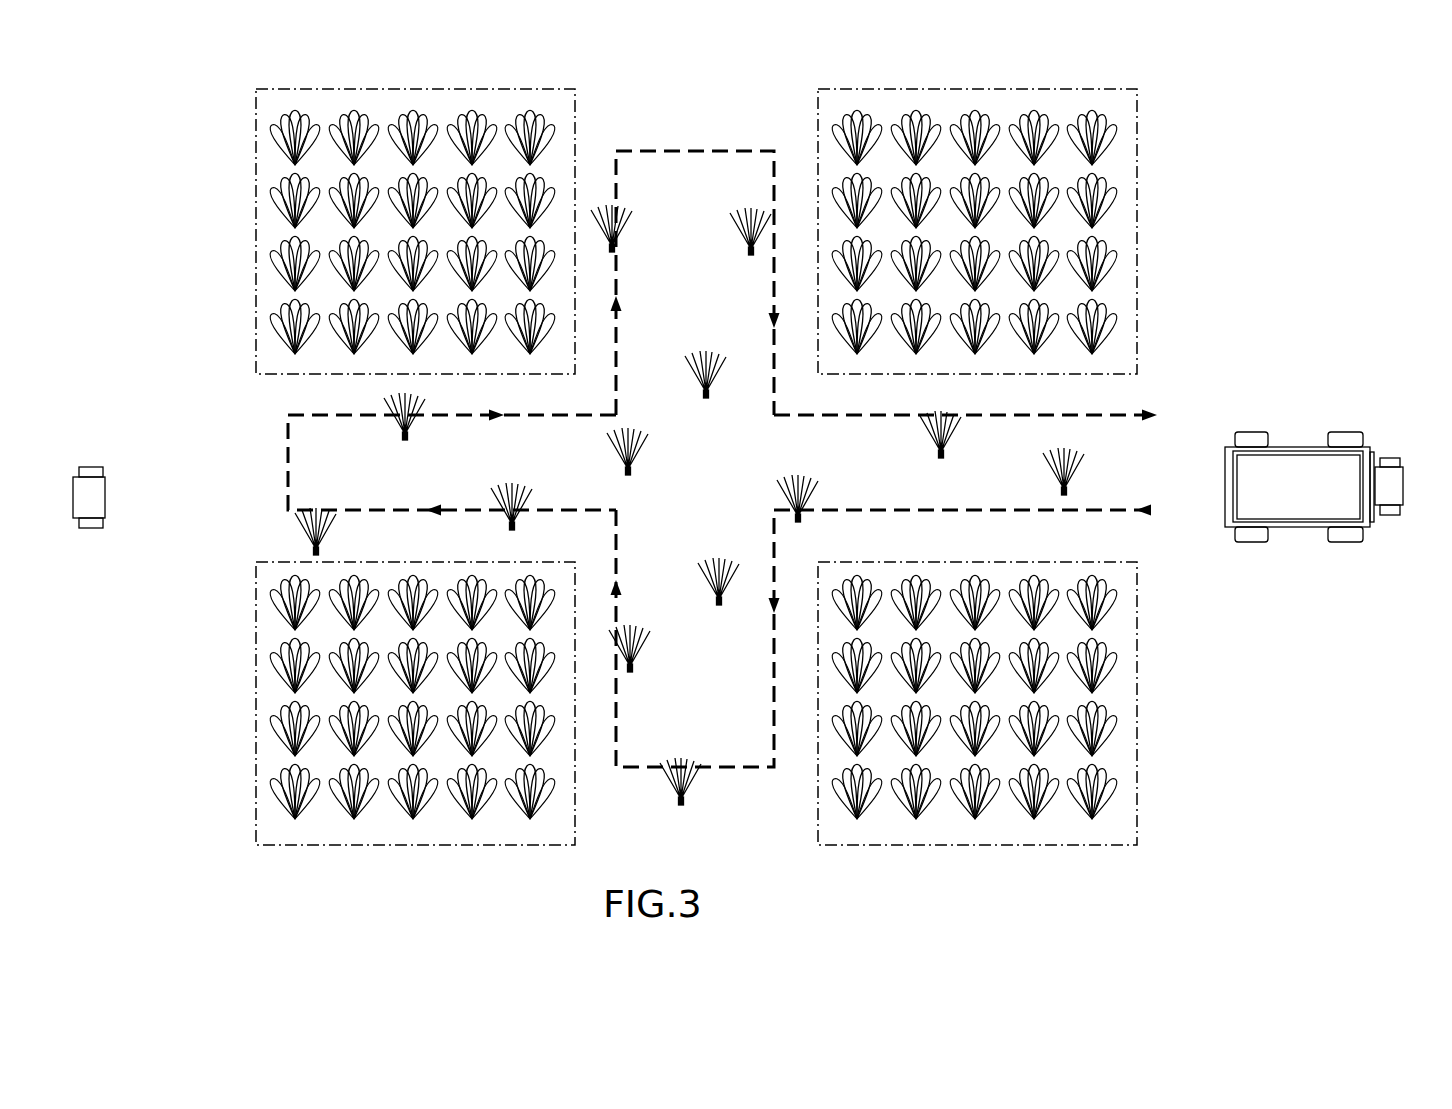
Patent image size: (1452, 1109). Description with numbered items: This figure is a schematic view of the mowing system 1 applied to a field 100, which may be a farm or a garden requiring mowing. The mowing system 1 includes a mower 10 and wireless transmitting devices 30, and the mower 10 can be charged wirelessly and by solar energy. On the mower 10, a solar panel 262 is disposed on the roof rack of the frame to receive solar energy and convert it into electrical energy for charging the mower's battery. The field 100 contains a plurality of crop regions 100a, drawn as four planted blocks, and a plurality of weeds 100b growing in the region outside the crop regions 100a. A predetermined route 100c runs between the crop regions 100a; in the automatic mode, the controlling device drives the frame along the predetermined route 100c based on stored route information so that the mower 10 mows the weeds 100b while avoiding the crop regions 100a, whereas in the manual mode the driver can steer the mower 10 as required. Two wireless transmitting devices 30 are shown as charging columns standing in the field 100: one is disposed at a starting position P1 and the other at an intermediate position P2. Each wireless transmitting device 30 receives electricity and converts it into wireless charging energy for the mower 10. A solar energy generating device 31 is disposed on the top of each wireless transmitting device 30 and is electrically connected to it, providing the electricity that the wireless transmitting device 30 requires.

The mowing system 1 is at (1350, 333).
The mower 10 is at (1291, 433).
The solar panel 262 is at (1310, 503).
The wireless transmitting device 30 is at (1399, 530).
The solar energy generating device 31 is at (1385, 456).
The field 100 is at (163, 182).
The crop region 100a is at (1137, 232).
The weed 100b is at (708, 398).
The predetermined route 100c is at (1113, 510).
The starting position P1 is at (1380, 548).
The intermediate position P2 is at (103, 553).